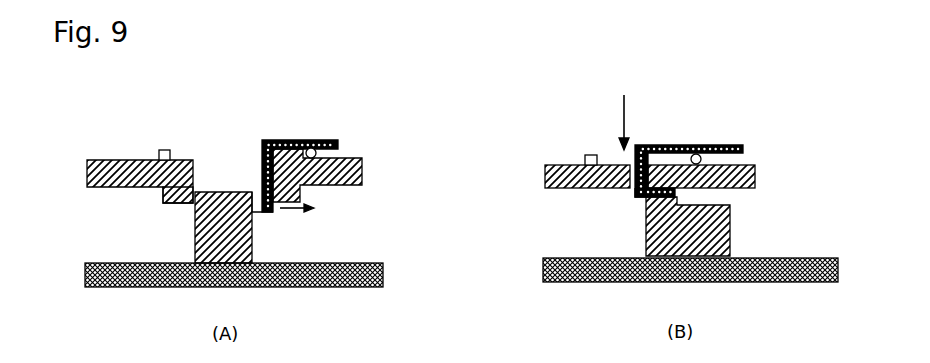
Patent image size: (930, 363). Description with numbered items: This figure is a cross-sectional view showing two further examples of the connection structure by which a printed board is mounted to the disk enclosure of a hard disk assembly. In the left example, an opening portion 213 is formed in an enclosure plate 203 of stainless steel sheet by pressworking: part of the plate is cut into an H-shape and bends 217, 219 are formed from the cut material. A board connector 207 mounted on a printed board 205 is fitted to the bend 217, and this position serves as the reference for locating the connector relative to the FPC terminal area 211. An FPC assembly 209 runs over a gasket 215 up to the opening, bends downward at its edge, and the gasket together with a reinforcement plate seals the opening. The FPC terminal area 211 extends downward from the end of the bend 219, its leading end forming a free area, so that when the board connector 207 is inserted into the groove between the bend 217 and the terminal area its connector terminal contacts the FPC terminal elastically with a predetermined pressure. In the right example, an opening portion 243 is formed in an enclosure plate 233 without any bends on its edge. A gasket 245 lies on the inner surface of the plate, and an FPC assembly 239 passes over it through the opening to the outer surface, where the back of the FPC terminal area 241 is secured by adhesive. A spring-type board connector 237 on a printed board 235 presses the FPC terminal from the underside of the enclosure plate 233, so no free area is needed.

The enclosure plate 203 is at (112, 160).
The printed board 205 is at (288, 288).
The board connector 207 is at (253, 222).
The FPC assembly 209 is at (312, 124).
The FPC terminal area 211 is at (262, 186).
The opening portion 213 is at (232, 156).
The gasket 215 is at (302, 140).
The bend 217 is at (168, 208).
The bend 219 is at (303, 202).
The enclosure plate 233 is at (553, 163).
The printed board 235 is at (730, 282).
The board connector 237 is at (733, 215).
The FPC assembly 239 is at (696, 124).
The FPC terminal area 241 is at (637, 196).
The opening portion 243 is at (625, 110).
The gasket 245 is at (682, 158).